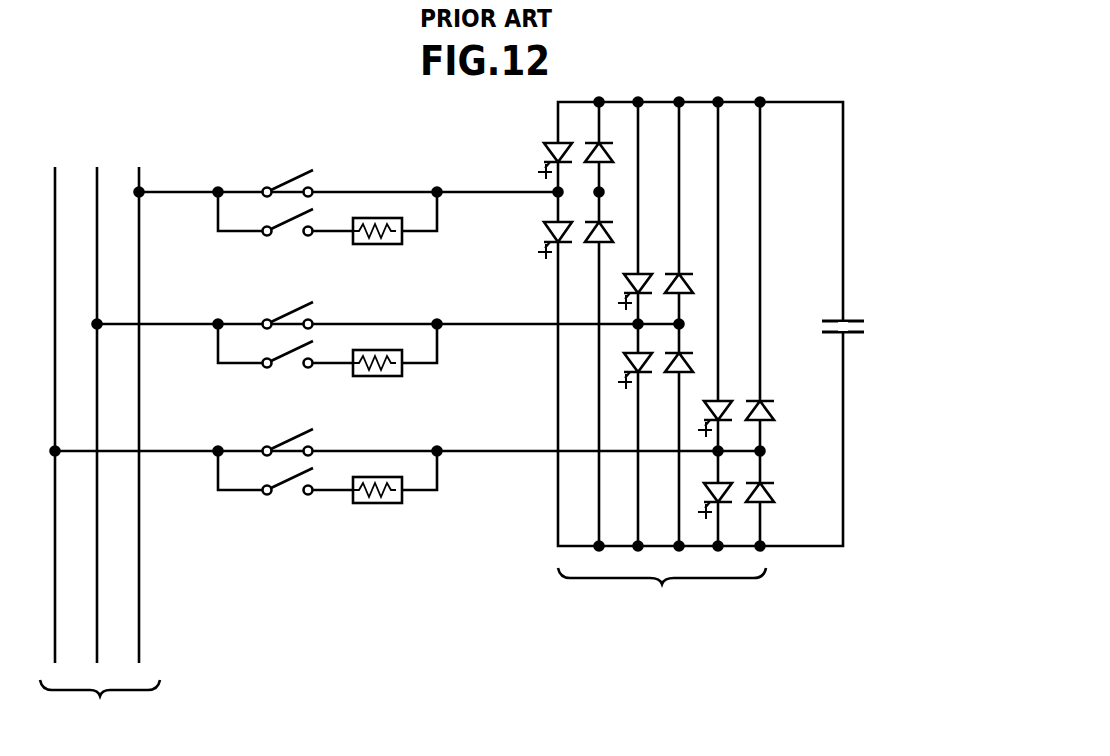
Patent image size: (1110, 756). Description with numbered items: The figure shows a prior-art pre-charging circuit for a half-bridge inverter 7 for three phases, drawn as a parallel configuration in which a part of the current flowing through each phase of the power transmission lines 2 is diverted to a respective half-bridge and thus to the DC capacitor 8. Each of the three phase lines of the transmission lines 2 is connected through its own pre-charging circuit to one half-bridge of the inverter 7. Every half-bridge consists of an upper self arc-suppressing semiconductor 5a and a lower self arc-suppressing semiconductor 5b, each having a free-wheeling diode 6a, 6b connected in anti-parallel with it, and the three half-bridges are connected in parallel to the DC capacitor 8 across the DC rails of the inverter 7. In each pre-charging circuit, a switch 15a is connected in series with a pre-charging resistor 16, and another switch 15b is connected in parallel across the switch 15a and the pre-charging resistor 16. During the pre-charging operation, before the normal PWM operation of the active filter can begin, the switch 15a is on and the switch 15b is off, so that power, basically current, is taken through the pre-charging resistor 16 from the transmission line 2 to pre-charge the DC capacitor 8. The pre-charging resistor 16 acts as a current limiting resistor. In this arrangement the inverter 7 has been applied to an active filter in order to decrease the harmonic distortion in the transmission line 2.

The power transmission lines 2 is at (100, 449).
The self arc-suppressing semiconductor 5a is at (706, 410).
The self arc-suppressing semiconductor 5b is at (706, 493).
The free-wheeling diode 6a is at (780, 422).
The free-wheeling diode 6b is at (782, 479).
The inverter 7 is at (681, 358).
The DC capacitor 8 is at (866, 330).
The switch 15a is at (300, 514).
The switch 15b is at (285, 431).
The pre-charging resistor 16 is at (408, 523).